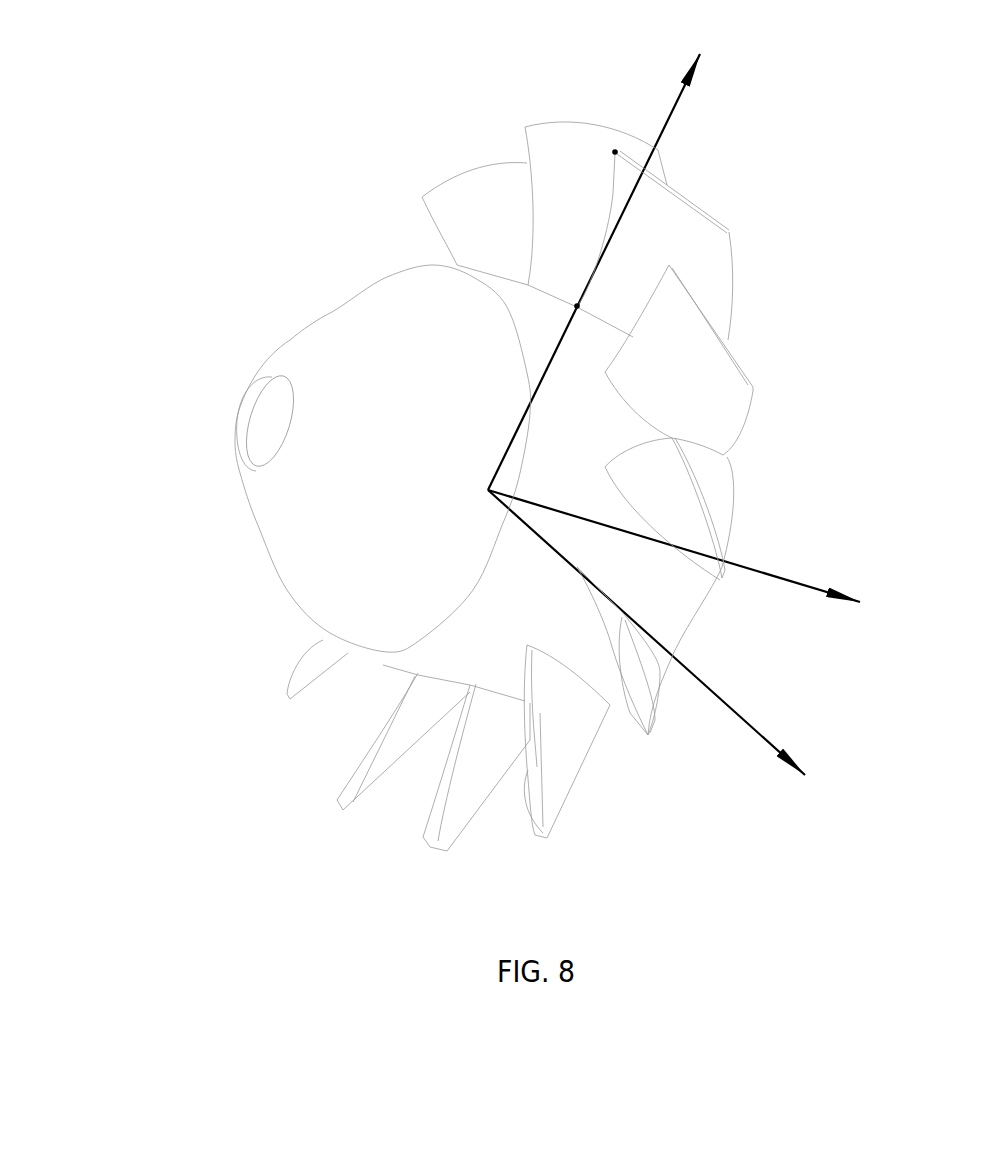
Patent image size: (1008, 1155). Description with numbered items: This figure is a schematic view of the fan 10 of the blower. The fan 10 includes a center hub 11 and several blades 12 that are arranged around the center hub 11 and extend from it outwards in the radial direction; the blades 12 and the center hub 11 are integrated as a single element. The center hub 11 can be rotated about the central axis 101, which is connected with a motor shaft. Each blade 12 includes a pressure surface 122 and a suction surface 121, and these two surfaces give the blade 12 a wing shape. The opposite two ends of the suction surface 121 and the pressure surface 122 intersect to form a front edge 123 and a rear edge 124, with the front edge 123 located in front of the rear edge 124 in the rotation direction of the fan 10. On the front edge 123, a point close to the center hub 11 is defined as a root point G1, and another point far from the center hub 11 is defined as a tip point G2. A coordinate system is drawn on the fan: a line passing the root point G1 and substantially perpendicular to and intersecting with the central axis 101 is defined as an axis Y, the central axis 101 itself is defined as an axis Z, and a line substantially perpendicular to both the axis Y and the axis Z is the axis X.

The fan 10 is at (468, 431).
The center hub 11 is at (720, 497).
The blade 12 is at (490, 192).
The central axis 101 is at (380, 458).
The suction surface 121 is at (737, 398).
The pressure surface 122 is at (562, 773).
The front edge 123 is at (615, 187).
The rear edge 124 is at (733, 292).
The root point G1 is at (580, 305).
The tip point G2 is at (615, 150).
The axis X is at (832, 791).
The axis Y is at (712, 24).
The axis Z is at (881, 608).